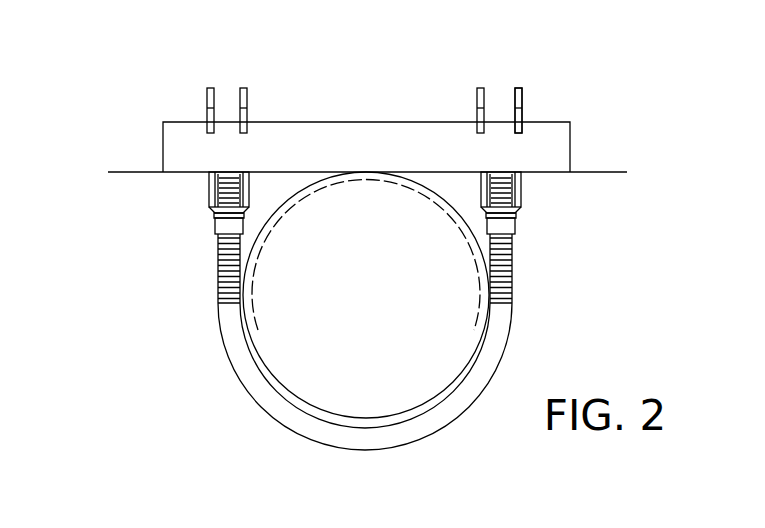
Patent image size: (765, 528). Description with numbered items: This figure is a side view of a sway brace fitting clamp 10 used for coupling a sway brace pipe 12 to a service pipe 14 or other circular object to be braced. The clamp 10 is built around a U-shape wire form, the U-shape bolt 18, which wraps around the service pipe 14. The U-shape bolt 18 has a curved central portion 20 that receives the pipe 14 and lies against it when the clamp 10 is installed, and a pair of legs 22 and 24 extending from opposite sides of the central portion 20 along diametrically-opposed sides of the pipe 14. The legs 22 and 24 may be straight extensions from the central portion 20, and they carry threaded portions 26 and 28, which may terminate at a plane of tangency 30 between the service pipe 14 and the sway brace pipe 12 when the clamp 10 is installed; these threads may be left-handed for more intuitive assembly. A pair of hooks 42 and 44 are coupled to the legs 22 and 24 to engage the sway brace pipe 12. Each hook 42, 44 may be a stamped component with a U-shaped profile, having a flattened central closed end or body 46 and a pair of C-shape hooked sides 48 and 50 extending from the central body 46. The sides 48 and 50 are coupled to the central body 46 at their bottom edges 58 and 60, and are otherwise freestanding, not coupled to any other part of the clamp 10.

The clamp 10 is at (137, 82).
The sway brace pipe 12 is at (364, 146).
The service pipe 14 is at (472, 250).
The U-shape bolt 18 is at (364, 363).
The curved central portion 20 is at (326, 432).
The leg 22 is at (181, 298).
The leg 24 is at (548, 293).
The threaded portion 26 is at (216, 262).
The threaded portion 28 is at (516, 256).
The plane of tangency 30 is at (135, 172).
The hook 42 is at (351, 79).
The hook 44 is at (526, 99).
The central body 46 is at (222, 226).
The hooked side 48 is at (210, 88).
The hooked side 50 is at (245, 88).
The bottom edge 58 is at (212, 212).
The bottom edge 60 is at (245, 211).